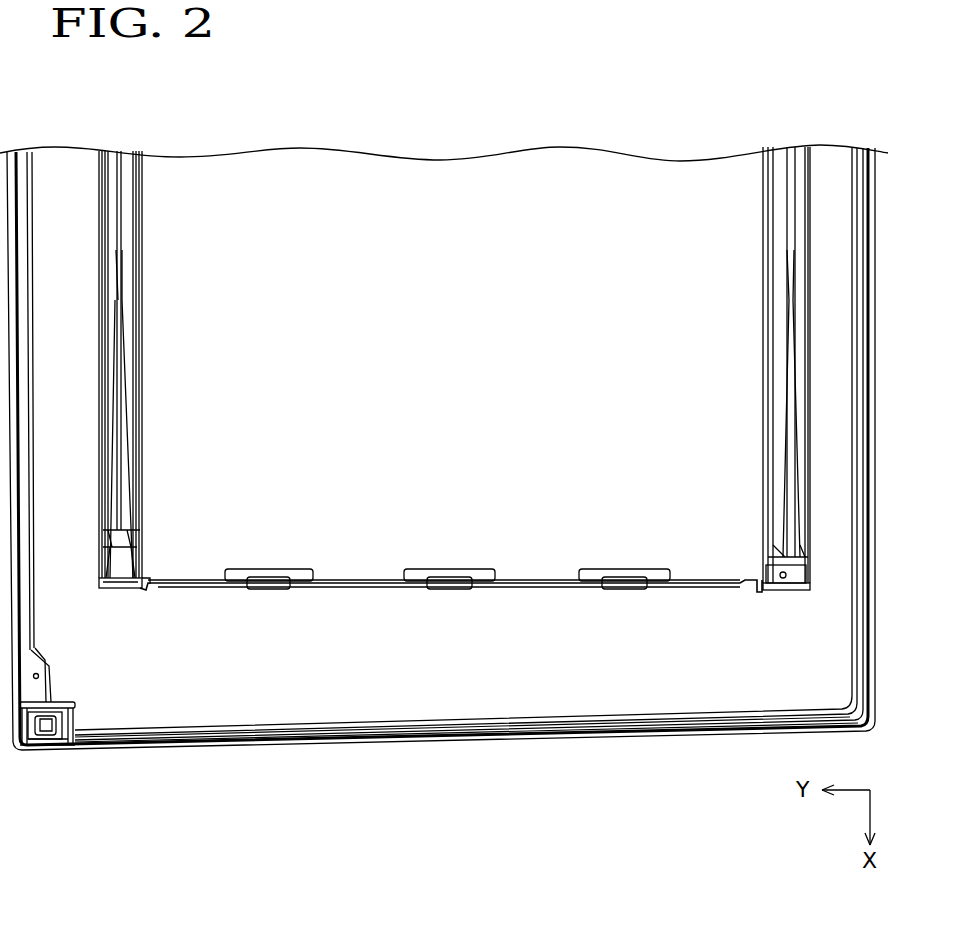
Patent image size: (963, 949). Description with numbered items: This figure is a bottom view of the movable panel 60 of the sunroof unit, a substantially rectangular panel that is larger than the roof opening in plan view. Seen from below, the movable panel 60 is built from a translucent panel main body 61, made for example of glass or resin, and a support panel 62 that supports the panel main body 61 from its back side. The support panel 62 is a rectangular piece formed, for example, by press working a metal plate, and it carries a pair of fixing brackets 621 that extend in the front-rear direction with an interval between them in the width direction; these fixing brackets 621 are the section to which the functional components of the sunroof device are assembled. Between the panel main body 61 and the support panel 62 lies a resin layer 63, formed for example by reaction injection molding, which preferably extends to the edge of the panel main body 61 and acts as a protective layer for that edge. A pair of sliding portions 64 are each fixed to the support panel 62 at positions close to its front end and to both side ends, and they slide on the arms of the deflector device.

The movable panel 60 is at (71, 108).
The panel main body 61 is at (593, 386).
The support panel 62 is at (720, 592).
The fixing brackets 621 is at (536, 579).
The resin layer 63 is at (445, 730).
The sliding portions 64 is at (46, 748).